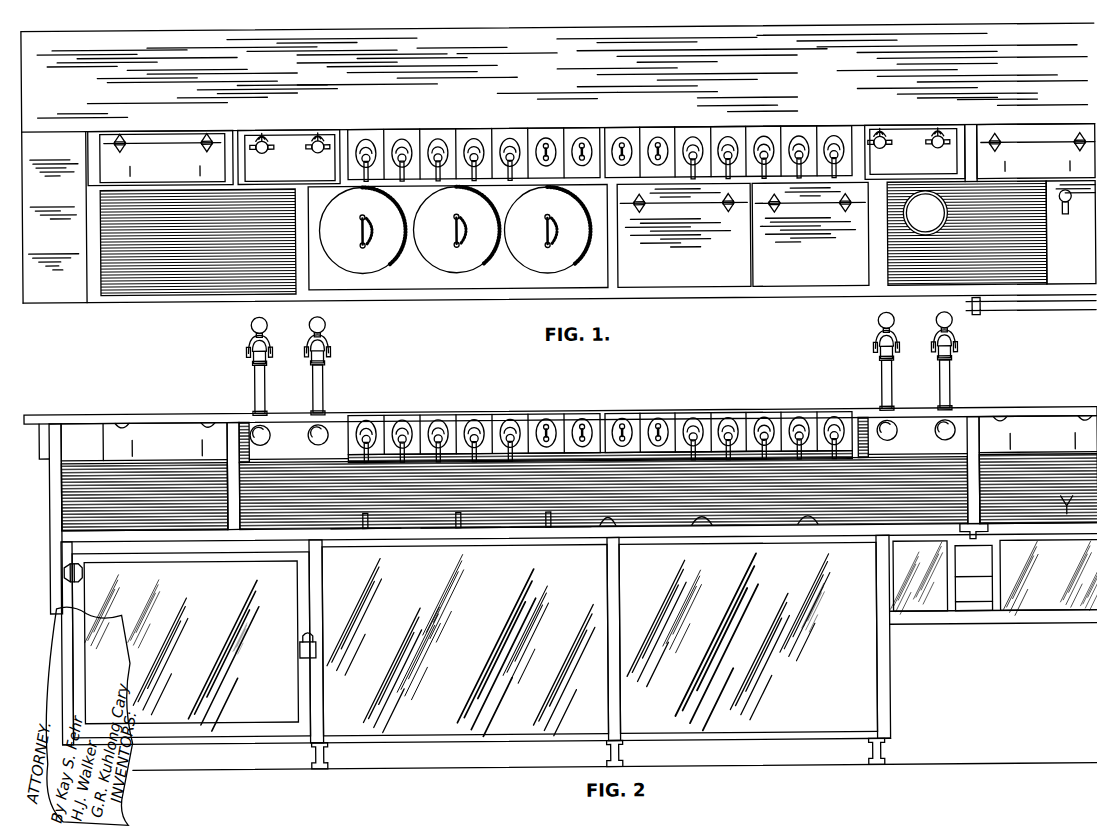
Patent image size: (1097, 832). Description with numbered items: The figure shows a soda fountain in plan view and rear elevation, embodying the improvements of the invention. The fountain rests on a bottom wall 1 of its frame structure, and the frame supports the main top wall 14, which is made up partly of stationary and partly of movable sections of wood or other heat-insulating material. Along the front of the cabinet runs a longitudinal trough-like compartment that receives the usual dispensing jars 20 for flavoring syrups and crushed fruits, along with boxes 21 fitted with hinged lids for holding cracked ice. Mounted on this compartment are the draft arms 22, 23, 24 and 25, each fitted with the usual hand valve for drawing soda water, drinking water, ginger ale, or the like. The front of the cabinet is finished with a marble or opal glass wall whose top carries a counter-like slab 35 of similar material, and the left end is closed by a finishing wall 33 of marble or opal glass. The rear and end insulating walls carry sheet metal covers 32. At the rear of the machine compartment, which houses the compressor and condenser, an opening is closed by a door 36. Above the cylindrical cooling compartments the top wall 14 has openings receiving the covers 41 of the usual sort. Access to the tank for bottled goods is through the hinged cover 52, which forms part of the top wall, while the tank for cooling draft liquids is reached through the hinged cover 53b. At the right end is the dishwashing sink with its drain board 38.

In FIG. 2, the bottom wall 1 is at (520, 742).
In FIG. 1, the main top wall 14 is at (525, 283).
In FIG. 2, the main top wall 14 is at (607, 522).
In FIG. 1, the dispensing jars 20 is at (479, 137).
In FIG. 2, the dispensing jars 20 is at (431, 415).
In FIG. 1, the boxes 21 is at (141, 139).
In FIG. 2, the boxes 21 is at (95, 480).
In FIG. 1, the draft arm 22 is at (262, 132).
In FIG. 2, the draft arm 22 is at (254, 381).
In FIG. 1, the draft arm 23 is at (322, 132).
In FIG. 2, the draft arm 23 is at (323, 382).
In FIG. 1, the draft arm 24 is at (891, 127).
In FIG. 2, the draft arm 24 is at (880, 371).
In FIG. 1, the draft arm 25 is at (949, 128).
In FIG. 2, the draft arm 25 is at (951, 373).
In FIG. 1, the sheet metal covers 32 is at (1090, 272).
In FIG. 2, the sheet metal covers 32 is at (771, 708).
In FIG. 2, the finishing wall 33 is at (49, 541).
In FIG. 1, the counter-like slab 35 is at (562, 75).
In FIG. 2, the counter-like slab 35 is at (150, 411).
In FIG. 2, the door 36 is at (221, 705).
In FIG. 1, the drain board 38 is at (1008, 268).
In FIG. 1, the covers 41 is at (387, 250).
In FIG. 2, the covers 41 is at (447, 522).
In FIG. 1, the hinged cover 52 is at (695, 281).
In FIG. 2, the hinged cover 52 is at (709, 522).
In FIG. 1, the hinged cover 53b is at (803, 281).
In FIG. 2, the hinged cover 53b is at (811, 522).